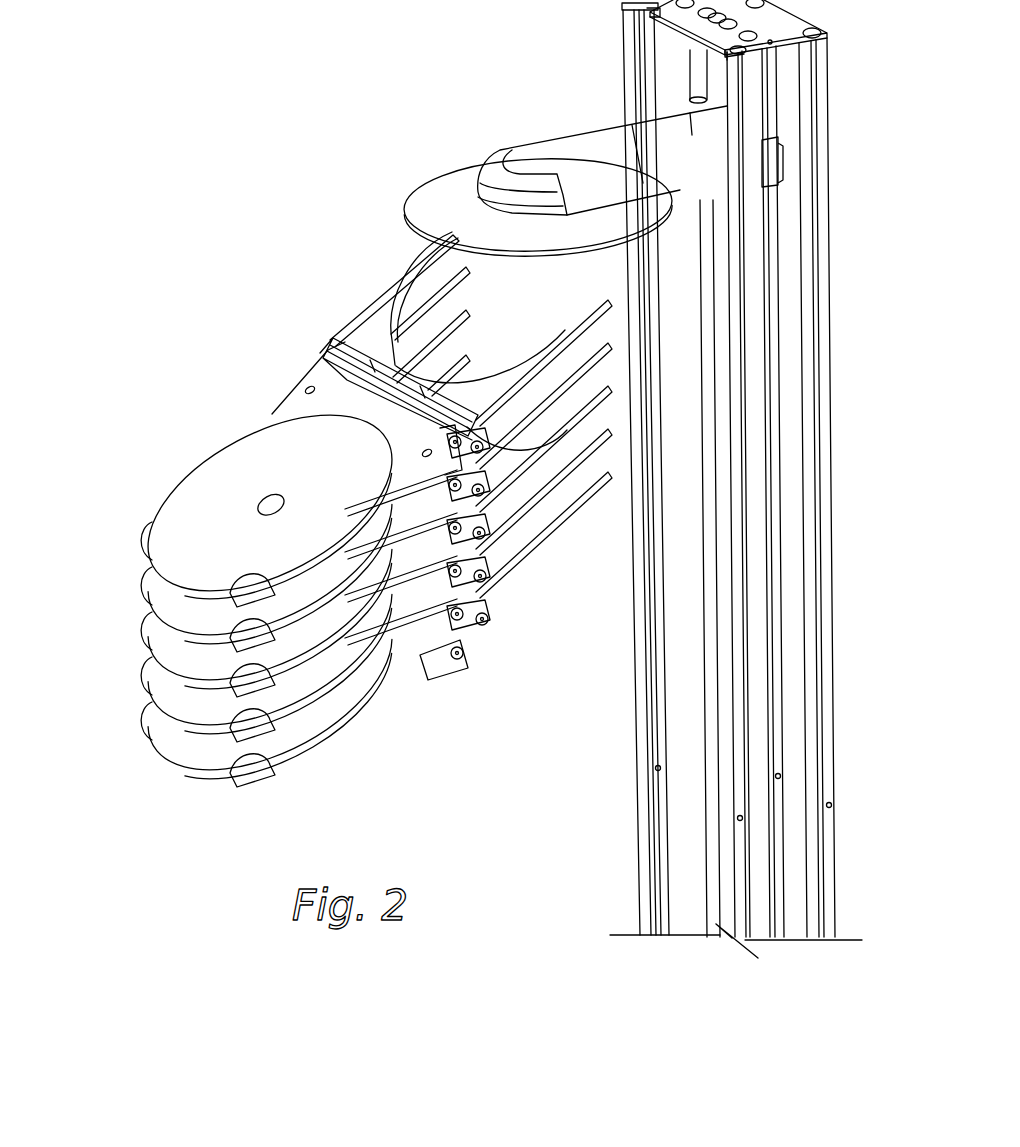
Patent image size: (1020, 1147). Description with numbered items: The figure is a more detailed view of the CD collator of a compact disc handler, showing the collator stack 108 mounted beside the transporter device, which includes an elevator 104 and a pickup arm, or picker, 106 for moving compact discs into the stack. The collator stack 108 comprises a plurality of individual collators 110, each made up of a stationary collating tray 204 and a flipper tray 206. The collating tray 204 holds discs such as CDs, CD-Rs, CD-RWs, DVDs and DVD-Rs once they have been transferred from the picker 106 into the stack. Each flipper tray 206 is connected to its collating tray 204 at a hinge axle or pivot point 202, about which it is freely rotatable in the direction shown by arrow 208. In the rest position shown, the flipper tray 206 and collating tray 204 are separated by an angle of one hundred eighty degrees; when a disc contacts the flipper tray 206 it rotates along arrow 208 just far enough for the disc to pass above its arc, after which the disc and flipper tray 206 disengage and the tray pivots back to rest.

The elevator 104 is at (827, 101).
The pickup arm 106 is at (560, 147).
The collator stack 108 is at (188, 306).
The collator 110 is at (281, 396).
The hinge axle 202 is at (323, 348).
The collating tray 204 is at (273, 413).
The flipper tray 206 is at (410, 240).
The arrow 208 is at (343, 293).